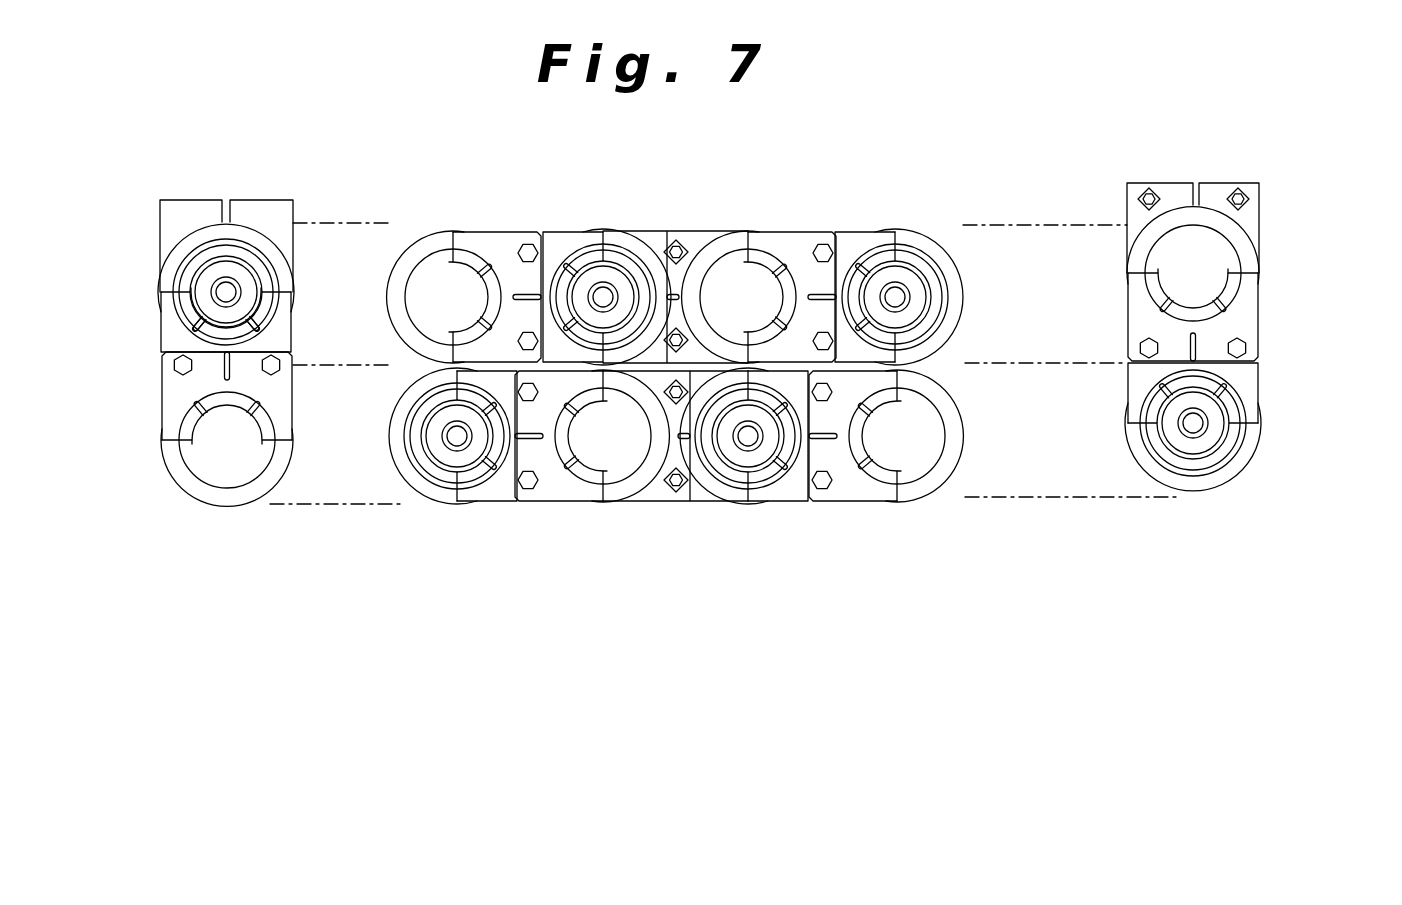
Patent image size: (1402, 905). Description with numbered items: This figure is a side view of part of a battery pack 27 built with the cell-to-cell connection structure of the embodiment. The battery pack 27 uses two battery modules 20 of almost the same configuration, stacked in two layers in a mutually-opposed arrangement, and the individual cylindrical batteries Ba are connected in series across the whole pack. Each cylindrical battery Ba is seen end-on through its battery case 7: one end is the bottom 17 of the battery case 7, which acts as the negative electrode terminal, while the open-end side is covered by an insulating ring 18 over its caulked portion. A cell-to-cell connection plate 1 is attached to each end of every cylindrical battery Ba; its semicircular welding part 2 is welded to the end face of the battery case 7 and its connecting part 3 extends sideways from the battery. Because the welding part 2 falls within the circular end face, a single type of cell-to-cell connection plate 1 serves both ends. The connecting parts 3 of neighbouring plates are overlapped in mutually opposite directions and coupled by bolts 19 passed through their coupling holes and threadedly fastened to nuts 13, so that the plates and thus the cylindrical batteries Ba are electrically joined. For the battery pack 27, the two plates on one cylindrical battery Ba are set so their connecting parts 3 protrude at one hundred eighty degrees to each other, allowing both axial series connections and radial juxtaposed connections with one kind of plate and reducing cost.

The cell-to-cell connection plate 1 is at (698, 347).
The welding part 2 is at (265, 300).
The connecting part 3 is at (698, 293).
The battery case 7 is at (290, 470).
The nut 13 is at (1138, 199).
The bottom 17 is at (228, 452).
The insulating ring 18 is at (205, 238).
The bolt 19 is at (182, 372).
The battery module 20 is at (1197, 331).
The battery pack 27 is at (1225, 331).
The cylindrical battery Ba is at (158, 289).